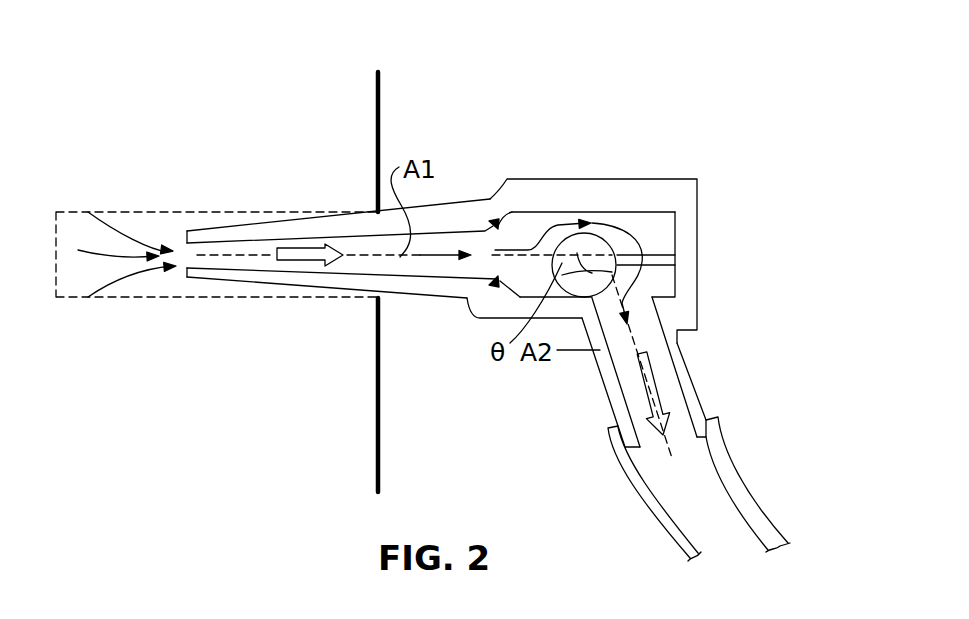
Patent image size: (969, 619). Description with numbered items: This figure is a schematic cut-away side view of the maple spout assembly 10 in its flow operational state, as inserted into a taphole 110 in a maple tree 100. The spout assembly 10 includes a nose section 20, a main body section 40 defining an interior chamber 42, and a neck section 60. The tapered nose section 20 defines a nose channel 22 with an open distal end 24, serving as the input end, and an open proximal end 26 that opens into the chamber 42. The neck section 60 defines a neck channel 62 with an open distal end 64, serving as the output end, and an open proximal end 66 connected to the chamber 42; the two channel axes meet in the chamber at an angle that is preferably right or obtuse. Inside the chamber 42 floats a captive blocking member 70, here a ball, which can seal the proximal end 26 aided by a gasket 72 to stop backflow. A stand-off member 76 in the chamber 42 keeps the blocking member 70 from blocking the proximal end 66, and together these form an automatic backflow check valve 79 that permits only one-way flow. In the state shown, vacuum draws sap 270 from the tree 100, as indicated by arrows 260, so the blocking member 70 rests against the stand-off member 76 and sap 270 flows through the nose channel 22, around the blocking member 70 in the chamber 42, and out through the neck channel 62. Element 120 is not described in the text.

The maple spout assembly 10 is at (611, 189).
The nose section 20 is at (396, 244).
The nose channel 22 is at (365, 243).
The open distal end 24 is at (187, 230).
The open proximal end 26 is at (503, 238).
The main body section 40 is at (677, 165).
The interior chamber 42 is at (537, 212).
The neck section 60 is at (602, 402).
The neck channel 62 is at (655, 357).
The open distal end 64 is at (612, 473).
The open proximal end 66 is at (641, 291).
The blocking member 70 is at (579, 234).
The gasket 72 is at (497, 284).
The stand-off member 76 is at (668, 254).
The automatic backflow check valve 79 is at (659, 229).
The maple tree 100 is at (381, 94).
The taphole 110 is at (180, 300).
The second hose 120 is at (743, 452).
The arrows 260 is at (310, 259).
The sap 270 is at (132, 212).